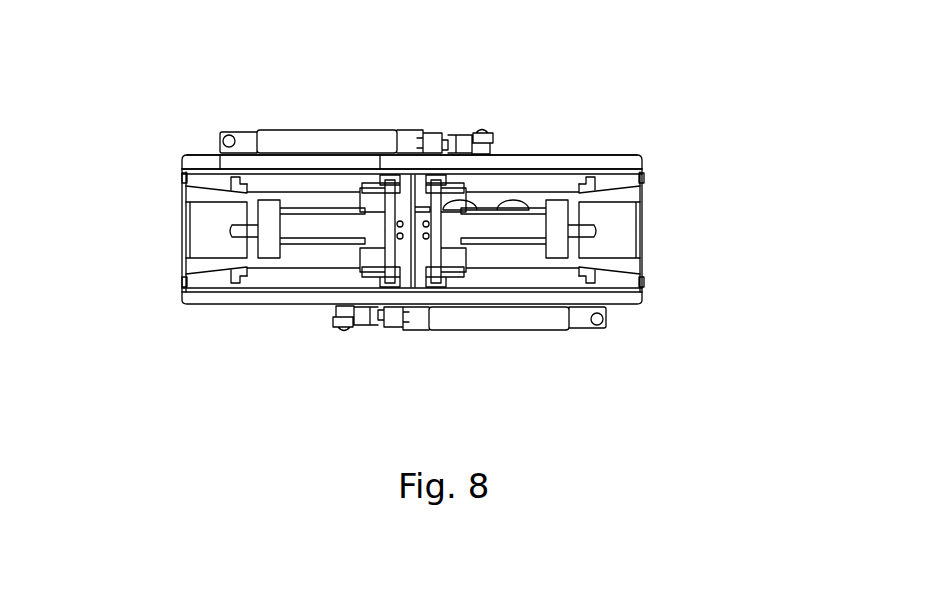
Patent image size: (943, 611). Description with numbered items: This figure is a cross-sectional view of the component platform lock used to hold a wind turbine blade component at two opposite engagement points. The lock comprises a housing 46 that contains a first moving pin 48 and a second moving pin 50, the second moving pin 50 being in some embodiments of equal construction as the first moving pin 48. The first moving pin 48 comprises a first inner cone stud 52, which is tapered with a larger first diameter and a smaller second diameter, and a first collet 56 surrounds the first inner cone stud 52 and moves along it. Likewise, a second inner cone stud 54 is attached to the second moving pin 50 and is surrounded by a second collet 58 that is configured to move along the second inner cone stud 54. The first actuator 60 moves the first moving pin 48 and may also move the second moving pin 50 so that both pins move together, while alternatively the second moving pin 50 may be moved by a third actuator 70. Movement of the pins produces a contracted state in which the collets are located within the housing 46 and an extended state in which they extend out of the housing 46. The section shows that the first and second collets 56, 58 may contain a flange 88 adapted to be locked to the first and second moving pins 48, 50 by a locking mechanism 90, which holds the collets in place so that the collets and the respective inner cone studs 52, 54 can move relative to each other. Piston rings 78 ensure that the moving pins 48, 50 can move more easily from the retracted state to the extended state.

The housing 46 is at (587, 149).
The first moving pin 48 is at (537, 155).
The second moving pin 50 is at (237, 163).
The locking mechanism 90 is at (607, 170).
The flange 88 is at (612, 178).
The piston rings 78 is at (547, 303).
The second collet 58 is at (173, 179).
The second inner cone stud 54 is at (173, 235).
The first collet 56 is at (647, 180).
The first inner cone stud 52 is at (648, 230).
The third actuator 70 is at (326, 118).
The first actuator 60 is at (527, 337).